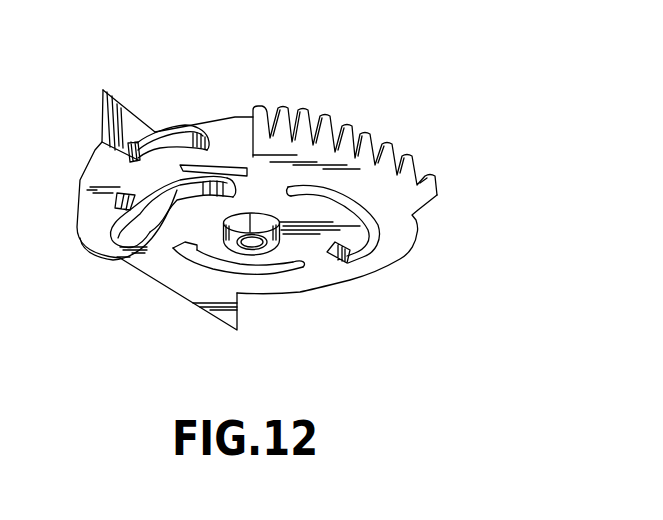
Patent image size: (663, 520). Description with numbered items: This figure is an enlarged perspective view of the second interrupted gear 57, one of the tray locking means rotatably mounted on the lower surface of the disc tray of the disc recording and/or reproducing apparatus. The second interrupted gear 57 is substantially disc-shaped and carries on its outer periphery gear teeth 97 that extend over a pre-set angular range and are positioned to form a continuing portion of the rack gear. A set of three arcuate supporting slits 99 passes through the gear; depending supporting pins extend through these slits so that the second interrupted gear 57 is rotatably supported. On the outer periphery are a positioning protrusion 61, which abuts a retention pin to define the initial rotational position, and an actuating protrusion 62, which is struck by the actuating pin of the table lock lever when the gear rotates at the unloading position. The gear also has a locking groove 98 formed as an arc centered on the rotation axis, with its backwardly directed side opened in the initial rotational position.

The second interrupted gear 57 is at (440, 232).
The actuating protrusion 62 is at (130, 110).
The positioning protrusion 61 is at (237, 305).
The gear teeth 97 is at (367, 128).
The arcuate supporting slits 99 is at (228, 178).
The locking groove 98 is at (118, 241).